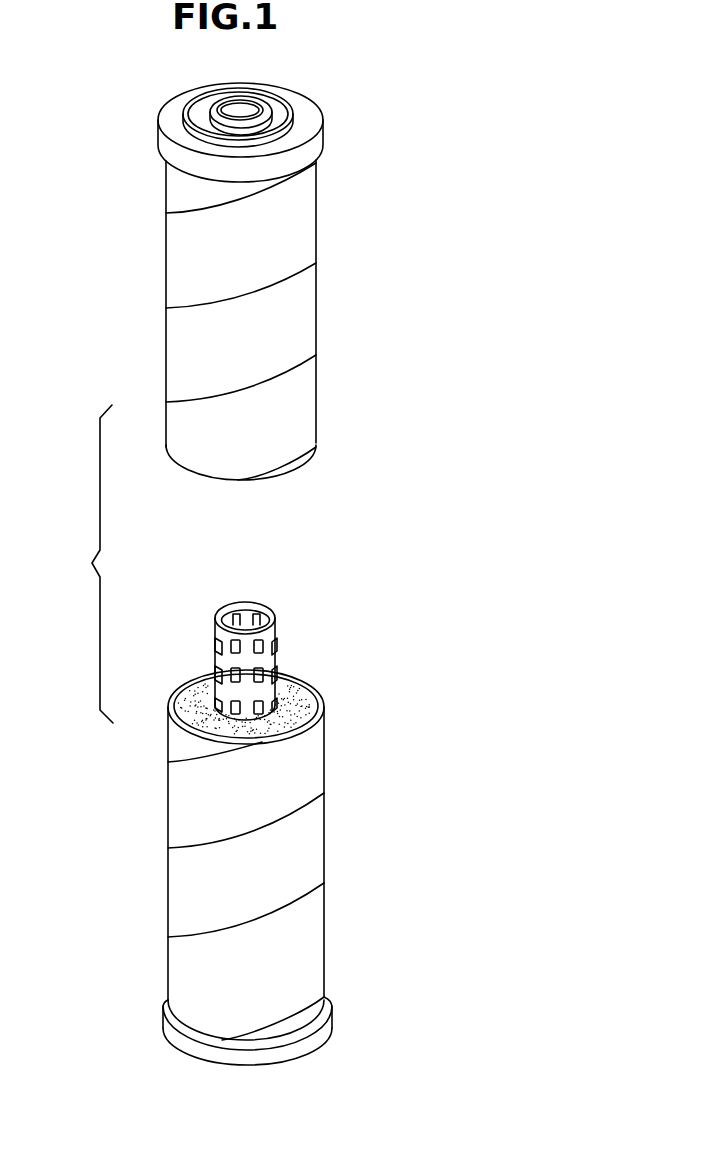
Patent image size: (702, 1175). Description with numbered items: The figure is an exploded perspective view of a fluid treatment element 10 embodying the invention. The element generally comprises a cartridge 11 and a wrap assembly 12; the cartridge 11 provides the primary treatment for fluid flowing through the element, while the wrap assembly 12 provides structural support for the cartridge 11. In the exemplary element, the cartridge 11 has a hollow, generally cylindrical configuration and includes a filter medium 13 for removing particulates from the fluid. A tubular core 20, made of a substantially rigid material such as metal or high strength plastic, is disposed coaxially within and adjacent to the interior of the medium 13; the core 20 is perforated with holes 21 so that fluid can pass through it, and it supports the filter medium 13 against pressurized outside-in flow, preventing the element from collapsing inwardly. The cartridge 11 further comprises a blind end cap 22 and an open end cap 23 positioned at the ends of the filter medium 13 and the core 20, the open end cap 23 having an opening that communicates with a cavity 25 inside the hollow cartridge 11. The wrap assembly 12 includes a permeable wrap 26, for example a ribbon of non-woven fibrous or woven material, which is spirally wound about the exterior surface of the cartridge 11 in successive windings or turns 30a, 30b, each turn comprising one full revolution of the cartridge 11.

The fluid treatment element 10 is at (108, 66).
The cartridge 11 is at (325, 134).
The wrap assembly 12 is at (320, 236).
The filter medium 13 is at (190, 712).
The tubular core 20 is at (237, 641).
The holes 21 is at (232, 655).
The blind end cap 22 is at (336, 1022).
The open end cap 23 is at (157, 154).
The cavity 25 is at (247, 612).
The permeable wrap 26 is at (303, 293).
The winding or turn 30a is at (172, 201).
The winding or turn 30b is at (305, 197).